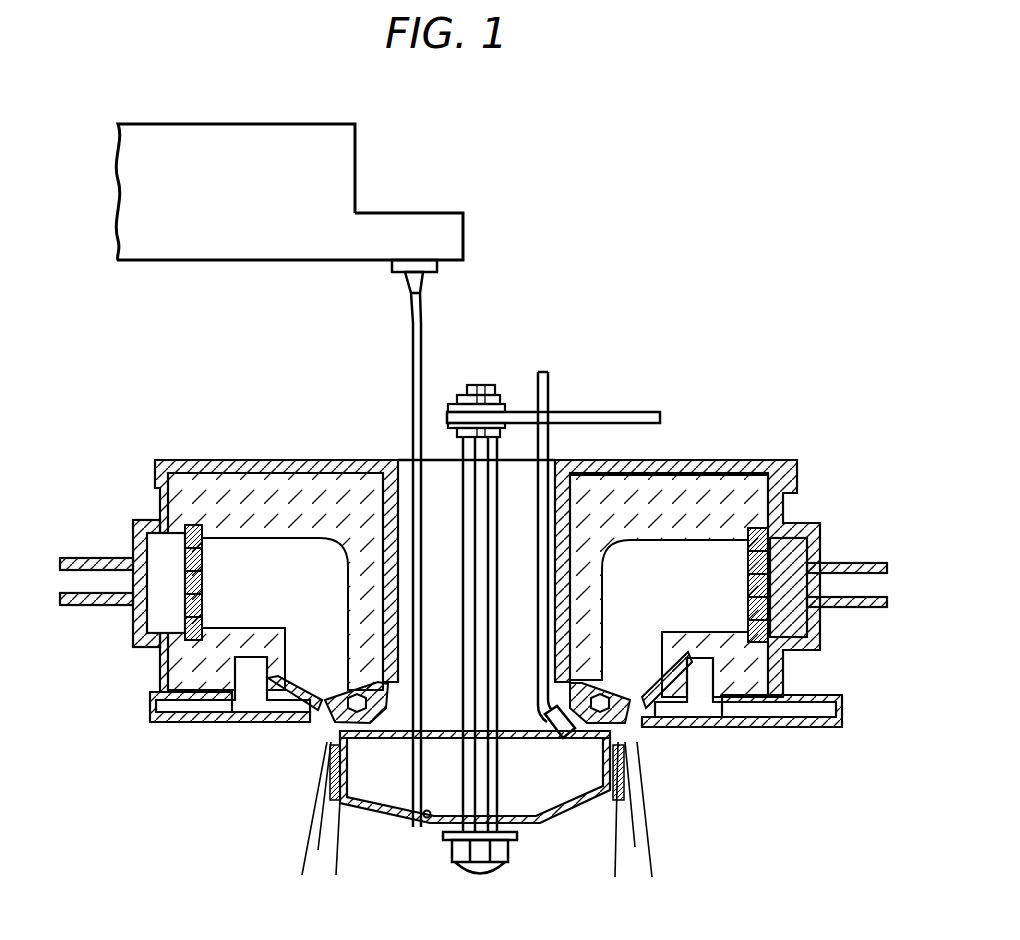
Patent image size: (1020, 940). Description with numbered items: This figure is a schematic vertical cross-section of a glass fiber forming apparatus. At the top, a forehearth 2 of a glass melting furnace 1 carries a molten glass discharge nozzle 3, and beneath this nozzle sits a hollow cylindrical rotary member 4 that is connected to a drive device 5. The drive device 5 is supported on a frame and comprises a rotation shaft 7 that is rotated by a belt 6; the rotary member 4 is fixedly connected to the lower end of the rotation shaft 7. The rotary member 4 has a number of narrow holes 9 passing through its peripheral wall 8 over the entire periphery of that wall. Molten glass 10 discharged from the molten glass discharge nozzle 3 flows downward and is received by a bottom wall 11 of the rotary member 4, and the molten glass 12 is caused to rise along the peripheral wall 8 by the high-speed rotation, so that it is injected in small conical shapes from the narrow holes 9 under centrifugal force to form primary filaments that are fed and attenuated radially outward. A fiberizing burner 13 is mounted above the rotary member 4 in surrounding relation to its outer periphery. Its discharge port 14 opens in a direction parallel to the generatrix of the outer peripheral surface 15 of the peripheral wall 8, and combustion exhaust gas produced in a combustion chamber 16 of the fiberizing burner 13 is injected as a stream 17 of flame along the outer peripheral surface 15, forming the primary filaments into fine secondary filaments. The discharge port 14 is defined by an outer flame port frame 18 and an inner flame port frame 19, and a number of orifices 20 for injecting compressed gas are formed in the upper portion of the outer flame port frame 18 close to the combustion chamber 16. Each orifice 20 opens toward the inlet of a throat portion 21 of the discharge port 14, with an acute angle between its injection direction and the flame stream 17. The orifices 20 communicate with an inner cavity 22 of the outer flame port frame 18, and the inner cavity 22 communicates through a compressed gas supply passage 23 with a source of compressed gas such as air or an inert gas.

The glass melting furnace 1 is at (320, 132).
The forehearth 2 is at (398, 215).
The molten glass discharge nozzle 3 is at (437, 270).
The rotary member 4 is at (549, 832).
The drive device 5 is at (487, 385).
The belt 6 is at (610, 410).
The rotation shaft 7 is at (492, 592).
The peripheral wall 8 is at (368, 818).
The narrow holes 9 is at (327, 753).
The molten glass 10 is at (412, 345).
The bottom wall 11 is at (427, 818).
The molten glass 12 is at (347, 813).
The fiberizing burner 13 is at (698, 487).
The discharge port 14 is at (317, 707).
The outer peripheral surface 15 is at (330, 795).
The combustion chamber 16 is at (250, 556).
The stream of flame 17 is at (320, 815).
The outer flame port frame 18 is at (212, 648).
The inner flame port frame 19 is at (388, 697).
The orifices 20 is at (290, 678).
The throat portion 21 is at (353, 740).
The inner cavity 22 is at (252, 697).
The compressed gas supply passage 23 is at (783, 712).